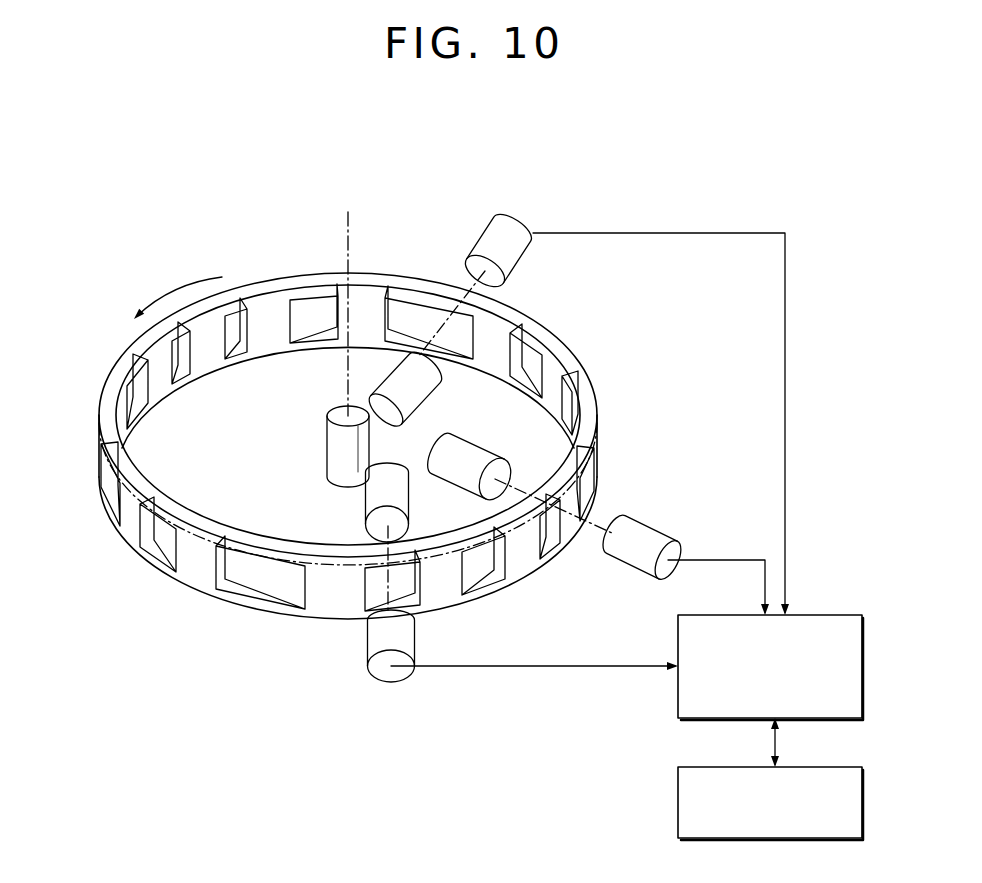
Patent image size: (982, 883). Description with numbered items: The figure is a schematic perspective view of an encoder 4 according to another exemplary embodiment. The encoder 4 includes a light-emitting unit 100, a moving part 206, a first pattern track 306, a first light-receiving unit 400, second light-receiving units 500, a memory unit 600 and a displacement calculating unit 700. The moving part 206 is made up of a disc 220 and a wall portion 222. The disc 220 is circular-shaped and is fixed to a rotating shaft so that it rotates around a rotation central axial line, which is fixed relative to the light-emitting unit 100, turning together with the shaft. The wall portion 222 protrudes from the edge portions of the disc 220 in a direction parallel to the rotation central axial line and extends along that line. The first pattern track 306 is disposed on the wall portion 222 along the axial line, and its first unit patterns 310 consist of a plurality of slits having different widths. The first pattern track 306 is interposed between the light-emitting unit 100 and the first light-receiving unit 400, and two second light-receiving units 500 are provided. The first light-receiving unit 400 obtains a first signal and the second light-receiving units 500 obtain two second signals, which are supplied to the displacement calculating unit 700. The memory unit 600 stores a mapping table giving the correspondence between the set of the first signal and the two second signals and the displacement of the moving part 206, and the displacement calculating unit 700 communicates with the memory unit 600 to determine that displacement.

The encoder 4 is at (609, 151).
The light-emitting unit 100 is at (405, 372).
The moving part 206 is at (116, 352).
The disc 220 is at (231, 512).
The wall portion 222 is at (332, 554).
The first pattern track 306 is at (207, 586).
The first unit patterns 310 is at (257, 586).
The first light-receiving unit 400 is at (488, 240).
The second light-receiving unit 500 is at (656, 540).
The memory unit 600 is at (807, 766).
The displacement calculating unit 700 is at (807, 616).